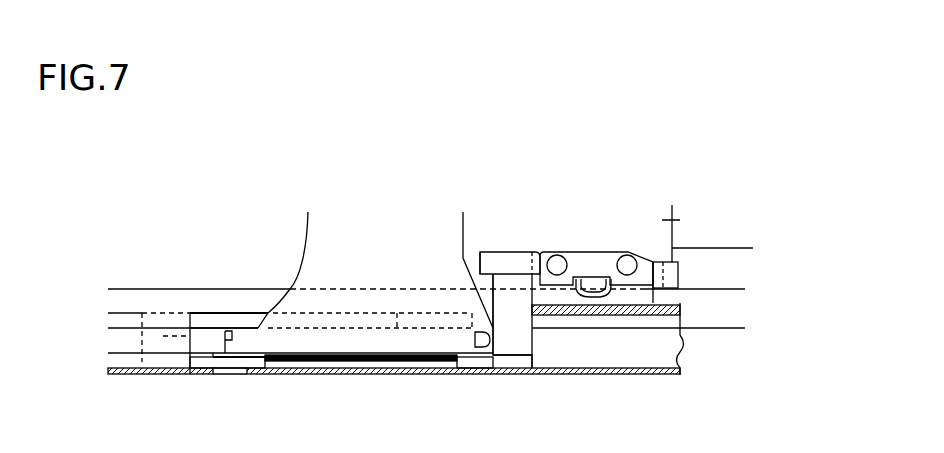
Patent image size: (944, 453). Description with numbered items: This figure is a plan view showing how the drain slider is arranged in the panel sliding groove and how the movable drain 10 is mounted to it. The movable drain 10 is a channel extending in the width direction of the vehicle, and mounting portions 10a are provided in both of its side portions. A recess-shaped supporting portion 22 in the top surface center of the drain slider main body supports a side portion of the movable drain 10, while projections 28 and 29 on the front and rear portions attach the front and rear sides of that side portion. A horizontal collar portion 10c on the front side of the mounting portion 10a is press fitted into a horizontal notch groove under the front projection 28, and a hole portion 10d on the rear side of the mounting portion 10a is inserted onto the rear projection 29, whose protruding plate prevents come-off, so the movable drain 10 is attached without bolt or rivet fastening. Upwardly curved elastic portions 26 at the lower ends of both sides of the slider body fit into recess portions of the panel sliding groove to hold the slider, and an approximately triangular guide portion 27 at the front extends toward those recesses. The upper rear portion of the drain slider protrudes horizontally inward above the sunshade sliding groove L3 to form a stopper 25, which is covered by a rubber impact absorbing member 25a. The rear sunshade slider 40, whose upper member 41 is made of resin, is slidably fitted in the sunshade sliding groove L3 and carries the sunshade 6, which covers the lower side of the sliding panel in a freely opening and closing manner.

The movable drain 10 is at (325, 242).
The mounting portion 10a is at (332, 343).
The horizontal collar portion 10c is at (237, 330).
The hole portion 10d is at (493, 350).
The supporting portion 22 is at (395, 361).
The stopper 25 is at (495, 252).
The impact absorbing member 25a is at (523, 258).
The elastic portion 26 is at (200, 362).
The guide portion 27 is at (163, 336).
The projection 28 is at (232, 341).
The projection 29 is at (482, 347).
The rear sunshade slider 40 is at (643, 276).
The upper member 41 is at (603, 257).
The sunshade 6 is at (680, 220).
The sunshade sliding groove L3 is at (737, 268).